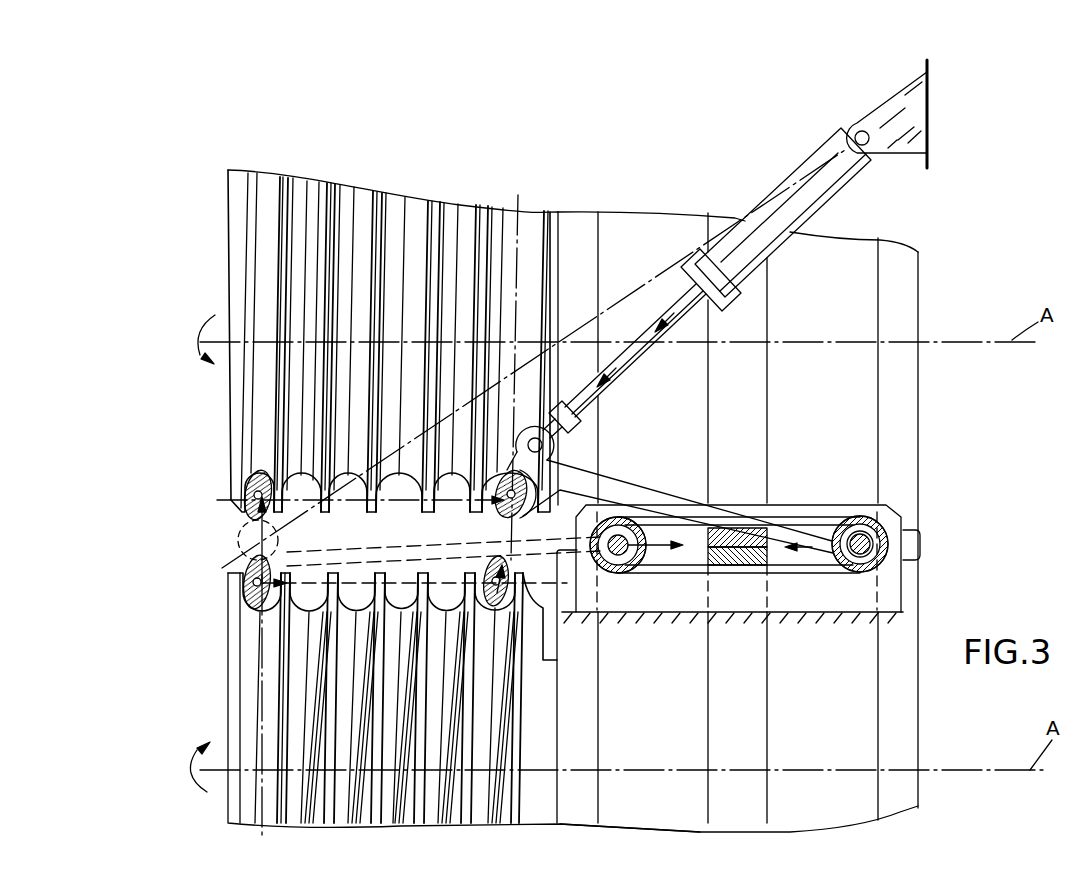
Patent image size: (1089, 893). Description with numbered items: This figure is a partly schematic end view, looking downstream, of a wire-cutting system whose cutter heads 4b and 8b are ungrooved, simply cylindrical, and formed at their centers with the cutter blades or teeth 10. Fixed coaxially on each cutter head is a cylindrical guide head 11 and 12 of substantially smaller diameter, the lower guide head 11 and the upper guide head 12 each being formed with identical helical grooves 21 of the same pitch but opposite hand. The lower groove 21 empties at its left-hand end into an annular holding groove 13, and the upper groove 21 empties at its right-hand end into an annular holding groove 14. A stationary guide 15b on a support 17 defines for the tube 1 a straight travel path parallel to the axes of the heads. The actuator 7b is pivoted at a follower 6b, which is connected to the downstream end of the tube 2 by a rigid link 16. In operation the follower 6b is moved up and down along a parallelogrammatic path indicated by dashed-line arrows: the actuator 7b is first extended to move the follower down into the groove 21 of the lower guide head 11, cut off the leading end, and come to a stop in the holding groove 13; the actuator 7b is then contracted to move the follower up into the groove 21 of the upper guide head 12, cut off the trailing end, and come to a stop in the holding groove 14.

The tube 1 is at (864, 530).
The tube 2 is at (895, 520).
The cutter head 4b is at (918, 795).
The follower 6b is at (500, 512).
The actuator 7b is at (786, 200).
The cutter head 8b is at (918, 285).
The cutter blades or teeth 10 is at (729, 530).
The guide head 11 is at (228, 708).
The guide head 12 is at (228, 233).
The annular holding groove 13 is at (262, 627).
The annular holding groove 14 is at (518, 228).
The guide 15b is at (668, 600).
The rigid link 16 is at (806, 533).
The support 17 is at (833, 617).
The helical grooves 21 is at (365, 250).